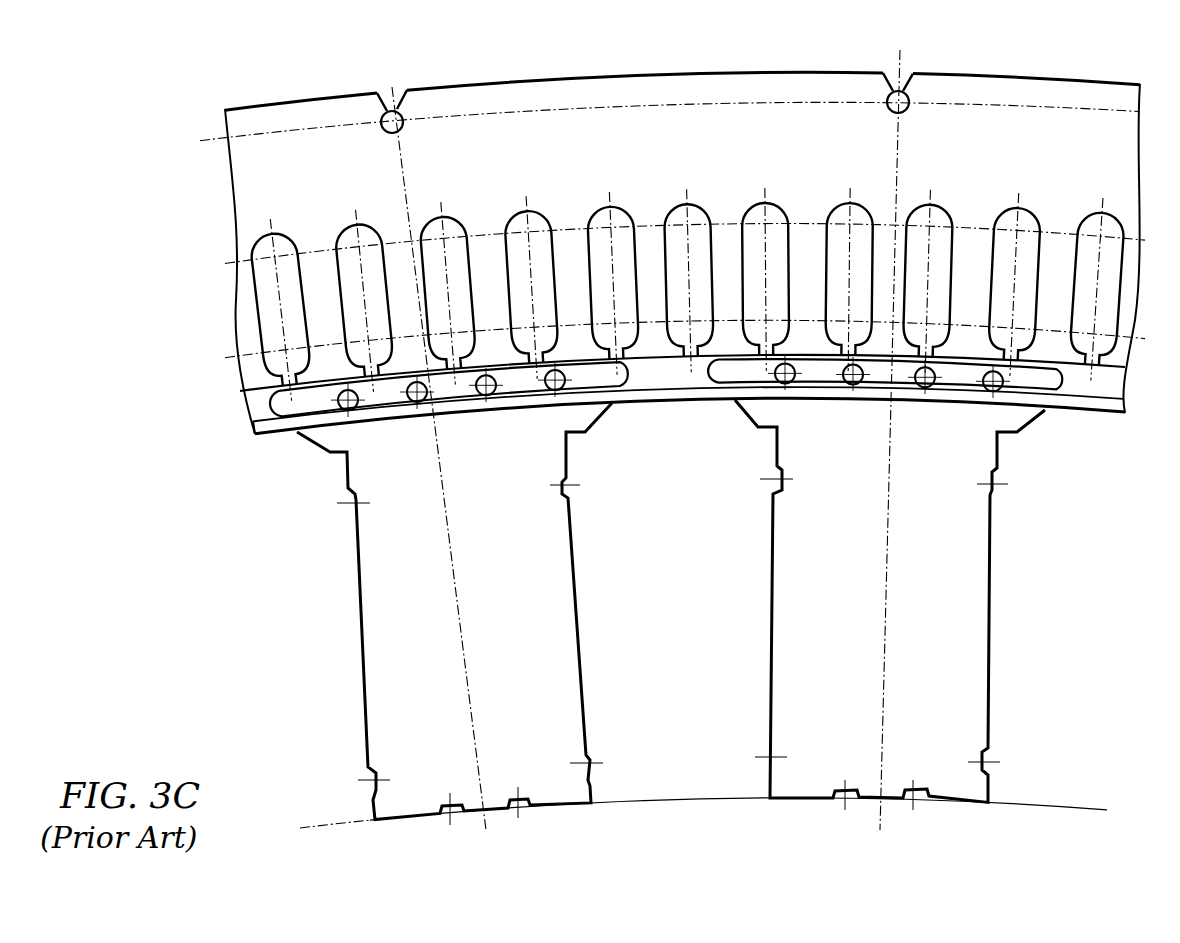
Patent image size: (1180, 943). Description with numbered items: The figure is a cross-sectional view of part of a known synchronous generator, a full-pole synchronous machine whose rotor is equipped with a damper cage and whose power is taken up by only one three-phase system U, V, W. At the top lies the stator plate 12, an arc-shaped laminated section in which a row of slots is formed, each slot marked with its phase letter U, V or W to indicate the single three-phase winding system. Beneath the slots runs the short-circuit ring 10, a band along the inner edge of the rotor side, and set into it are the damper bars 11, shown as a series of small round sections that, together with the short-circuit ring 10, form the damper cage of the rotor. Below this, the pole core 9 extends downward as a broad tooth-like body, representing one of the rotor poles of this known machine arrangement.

The stator plate 12 is at (592, 158).
The pole core 9 is at (520, 578).
The short-circuit ring 10 is at (567, 411).
The damper bars 11 is at (845, 386).